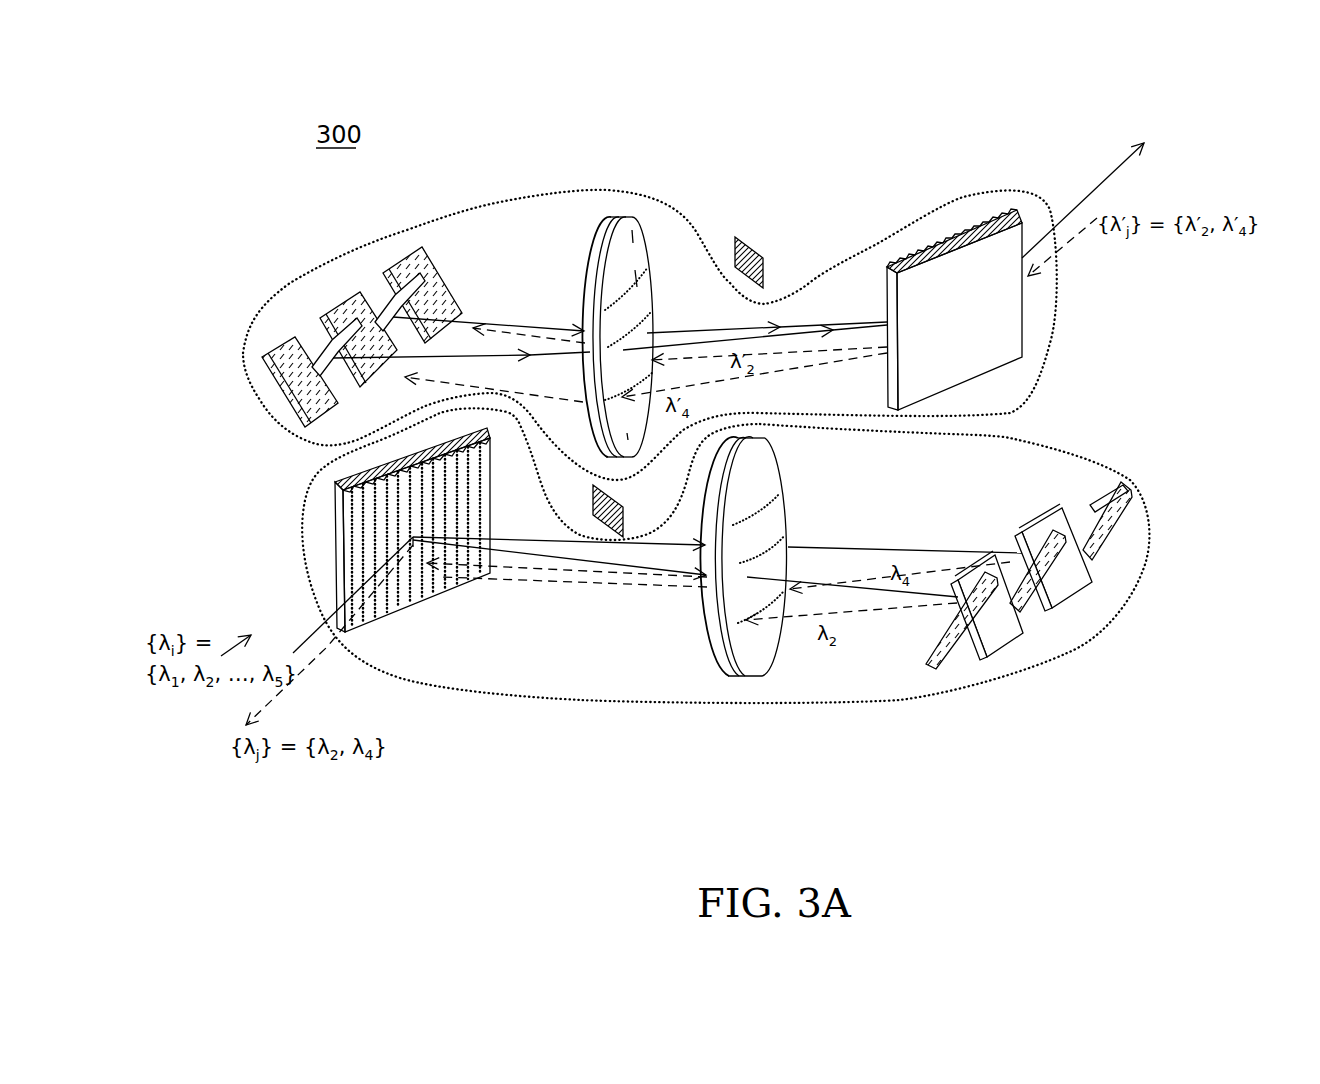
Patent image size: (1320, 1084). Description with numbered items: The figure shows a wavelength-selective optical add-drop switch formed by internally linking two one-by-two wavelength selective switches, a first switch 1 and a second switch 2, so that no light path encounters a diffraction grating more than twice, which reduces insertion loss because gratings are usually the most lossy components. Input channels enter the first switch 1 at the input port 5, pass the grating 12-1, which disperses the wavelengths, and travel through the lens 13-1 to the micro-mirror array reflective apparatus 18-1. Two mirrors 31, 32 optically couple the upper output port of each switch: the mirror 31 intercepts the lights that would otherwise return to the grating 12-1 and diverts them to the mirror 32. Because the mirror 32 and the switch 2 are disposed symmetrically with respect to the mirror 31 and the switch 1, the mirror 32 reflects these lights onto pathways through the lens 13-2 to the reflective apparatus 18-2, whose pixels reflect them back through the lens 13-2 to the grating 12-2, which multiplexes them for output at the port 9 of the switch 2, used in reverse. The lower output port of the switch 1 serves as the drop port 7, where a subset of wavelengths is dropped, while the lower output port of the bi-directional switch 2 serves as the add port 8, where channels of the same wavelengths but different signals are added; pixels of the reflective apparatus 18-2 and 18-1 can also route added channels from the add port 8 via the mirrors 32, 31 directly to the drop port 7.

The first 1×2 wavelength selective switch 1 is at (1120, 470).
The second 1×2 wavelength selective switch 2 is at (1008, 188).
The input port 5 is at (303, 643).
The drop port 7 is at (320, 652).
The add port 8 is at (1075, 232).
The input port 9 is at (1113, 170).
The grating 12-1 is at (343, 539).
The grating 12-2 is at (942, 253).
The lens 13-1 is at (748, 678).
The lens 13-2 is at (624, 217).
The reflective apparatus 18-1 is at (1082, 612).
The reflective apparatus 18-2 is at (333, 284).
The mirror 31 is at (623, 510).
The mirror 32 is at (763, 260).